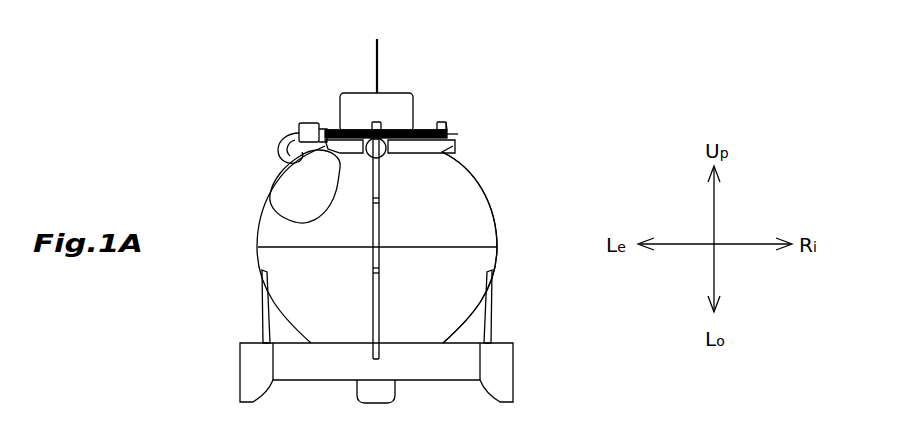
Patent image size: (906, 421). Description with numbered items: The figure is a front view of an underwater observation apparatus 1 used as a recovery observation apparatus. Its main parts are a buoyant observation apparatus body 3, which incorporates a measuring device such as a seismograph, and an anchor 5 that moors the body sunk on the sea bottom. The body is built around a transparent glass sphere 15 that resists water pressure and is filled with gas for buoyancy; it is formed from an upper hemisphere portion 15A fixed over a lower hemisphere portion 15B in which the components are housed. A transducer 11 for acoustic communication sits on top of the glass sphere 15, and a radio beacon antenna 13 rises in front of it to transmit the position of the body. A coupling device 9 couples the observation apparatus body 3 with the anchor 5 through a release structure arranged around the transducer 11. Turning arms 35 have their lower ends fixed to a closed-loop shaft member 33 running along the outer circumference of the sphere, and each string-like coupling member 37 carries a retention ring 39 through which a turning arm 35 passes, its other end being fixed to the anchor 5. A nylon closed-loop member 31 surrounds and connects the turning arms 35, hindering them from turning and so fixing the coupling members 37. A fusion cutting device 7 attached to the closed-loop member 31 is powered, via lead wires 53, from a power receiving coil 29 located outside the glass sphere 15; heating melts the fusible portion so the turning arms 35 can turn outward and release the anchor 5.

The underwater observation apparatus 1 is at (486, 58).
The observation apparatus body 3 is at (480, 180).
The anchor 5 is at (515, 371).
The fusion cutting device 7 is at (304, 123).
The coupling device 9 is at (450, 130).
The transducer 11 is at (340, 104).
The radio beacon antenna 13 is at (379, 50).
The glass sphere 15 is at (493, 198).
The upper hemisphere portion 15A is at (495, 236).
The lower hemisphere portion 15B is at (495, 271).
The power receiving coil 29 is at (285, 199).
The closed-loop member 31 is at (458, 134).
The closed-loop shaft member 33 is at (428, 128).
The turning arm 35 is at (375, 122).
The coupling member 37 is at (380, 206).
The retention ring 39 is at (390, 150).
The lead wire 53 is at (282, 136).